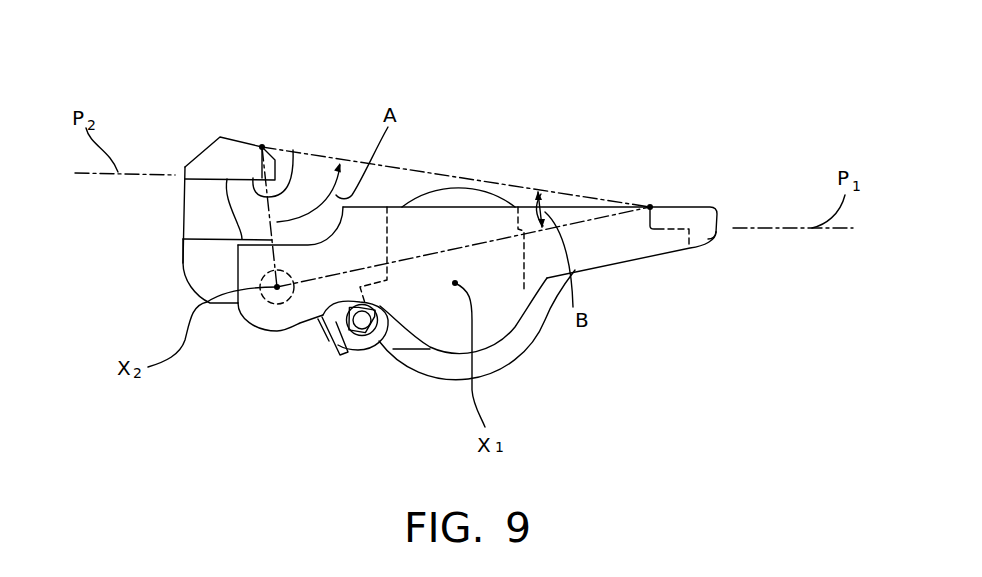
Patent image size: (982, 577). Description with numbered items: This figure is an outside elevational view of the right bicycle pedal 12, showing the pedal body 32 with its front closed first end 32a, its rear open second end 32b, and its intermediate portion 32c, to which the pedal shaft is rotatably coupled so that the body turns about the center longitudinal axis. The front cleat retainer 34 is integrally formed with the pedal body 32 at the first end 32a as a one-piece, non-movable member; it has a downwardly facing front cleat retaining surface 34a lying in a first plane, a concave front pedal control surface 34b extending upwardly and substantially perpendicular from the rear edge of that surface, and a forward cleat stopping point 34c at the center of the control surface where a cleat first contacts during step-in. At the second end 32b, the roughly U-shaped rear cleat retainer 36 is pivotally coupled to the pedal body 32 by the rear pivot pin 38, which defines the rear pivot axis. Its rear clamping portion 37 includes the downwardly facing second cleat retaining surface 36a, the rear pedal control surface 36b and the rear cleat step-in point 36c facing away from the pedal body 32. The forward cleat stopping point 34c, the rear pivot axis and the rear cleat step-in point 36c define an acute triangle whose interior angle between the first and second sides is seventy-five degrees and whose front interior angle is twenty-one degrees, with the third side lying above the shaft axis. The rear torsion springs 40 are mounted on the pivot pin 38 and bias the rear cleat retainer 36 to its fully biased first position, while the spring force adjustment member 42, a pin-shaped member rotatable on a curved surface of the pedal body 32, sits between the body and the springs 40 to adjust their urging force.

The bicycle pedal 12 is at (562, 127).
The pedal body 32 is at (613, 268).
The first end 32a is at (715, 238).
The second end 32b is at (247, 263).
The intermediate portion 32c is at (470, 190).
The front cleat retainer 34 is at (722, 210).
The front cleat retaining surface 34a is at (672, 230).
The front pedal control surface 34b is at (655, 226).
The forward cleat stopping point 34c is at (651, 206).
The rear cleat retainer 36 is at (198, 150).
The second cleat retaining surface 36a is at (276, 222).
The rear pedal control surface 36b is at (293, 150).
The rear cleat step-in point 36c is at (263, 147).
The rear clamping portion 37 is at (219, 137).
The rear pivot pin 38 is at (277, 302).
The rear torsion springs 40 is at (319, 342).
The spring force adjustment member 42 is at (368, 340).